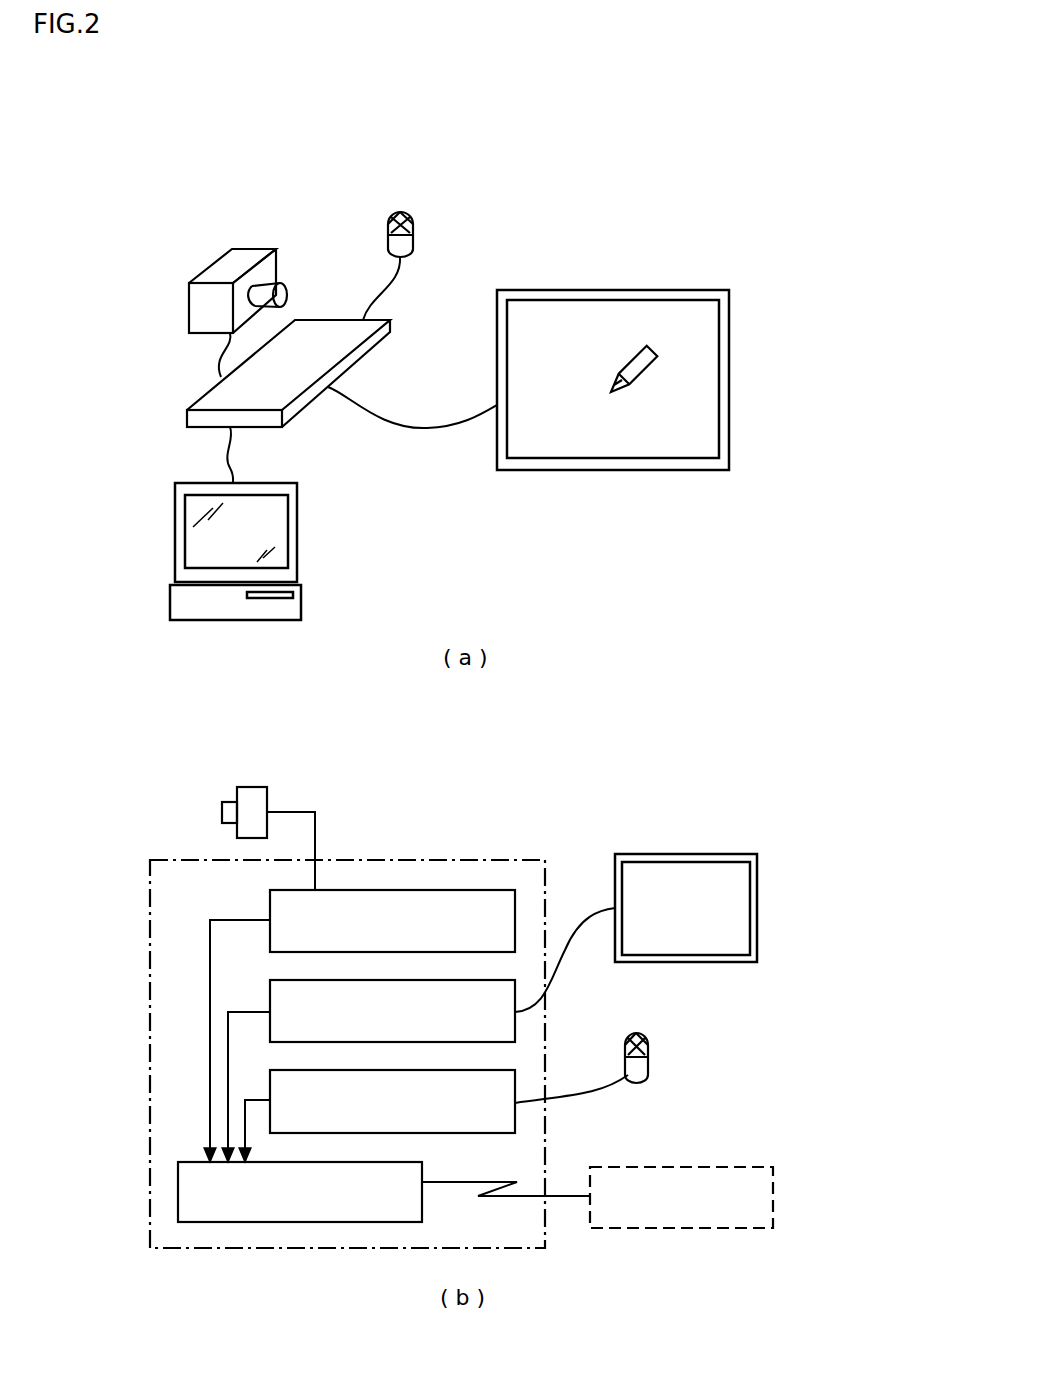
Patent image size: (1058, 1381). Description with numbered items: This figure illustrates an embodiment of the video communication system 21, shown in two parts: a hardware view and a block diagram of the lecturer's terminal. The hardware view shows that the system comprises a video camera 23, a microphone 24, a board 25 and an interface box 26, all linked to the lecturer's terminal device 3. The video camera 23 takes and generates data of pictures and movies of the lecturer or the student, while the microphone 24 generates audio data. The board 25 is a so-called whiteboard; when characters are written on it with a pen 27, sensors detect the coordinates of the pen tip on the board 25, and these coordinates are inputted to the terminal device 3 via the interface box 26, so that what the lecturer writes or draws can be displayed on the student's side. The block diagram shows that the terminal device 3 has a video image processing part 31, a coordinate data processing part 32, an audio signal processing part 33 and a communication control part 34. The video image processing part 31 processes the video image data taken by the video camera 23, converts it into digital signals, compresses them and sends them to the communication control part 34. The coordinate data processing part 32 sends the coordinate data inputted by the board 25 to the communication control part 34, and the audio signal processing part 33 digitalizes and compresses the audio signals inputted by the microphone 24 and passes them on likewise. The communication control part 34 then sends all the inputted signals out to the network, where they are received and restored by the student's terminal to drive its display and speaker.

The video communication system 21 is at (168, 315).
The video camera 23 is at (255, 251).
The microphone 24 is at (413, 224).
The board 25 is at (705, 290).
The interface box 26 is at (187, 418).
The pen 27 is at (647, 371).
The terminal device 3 is at (297, 497).
The video image processing part 31 is at (502, 890).
The coordinate data processing part 32 is at (515, 1025).
The audio signal processing part 33 is at (515, 1120).
The communication control part 34 is at (422, 1210).